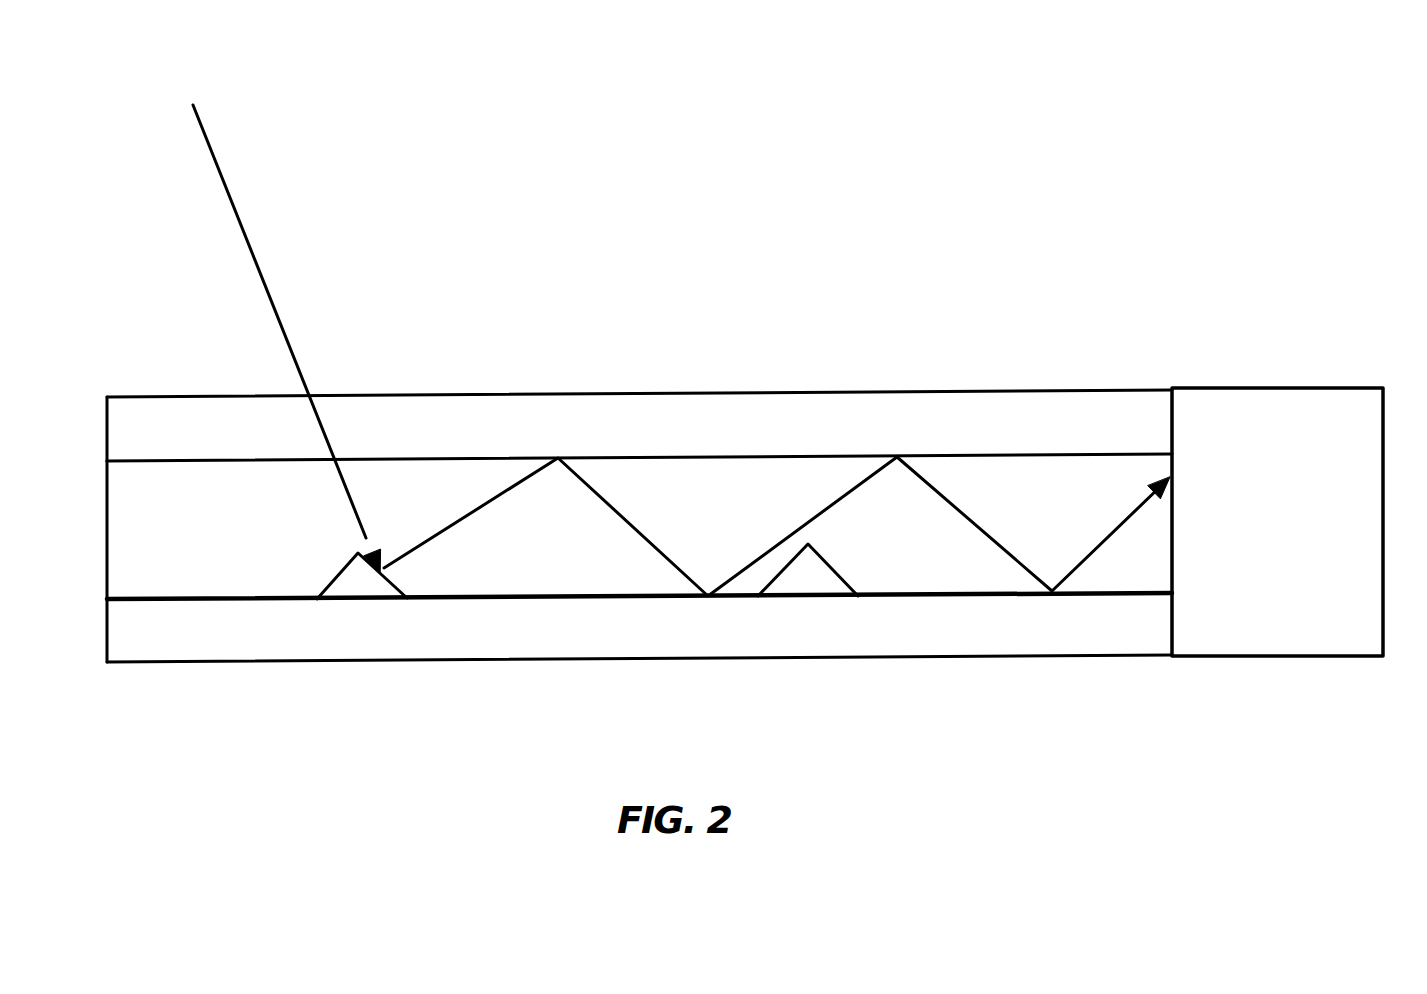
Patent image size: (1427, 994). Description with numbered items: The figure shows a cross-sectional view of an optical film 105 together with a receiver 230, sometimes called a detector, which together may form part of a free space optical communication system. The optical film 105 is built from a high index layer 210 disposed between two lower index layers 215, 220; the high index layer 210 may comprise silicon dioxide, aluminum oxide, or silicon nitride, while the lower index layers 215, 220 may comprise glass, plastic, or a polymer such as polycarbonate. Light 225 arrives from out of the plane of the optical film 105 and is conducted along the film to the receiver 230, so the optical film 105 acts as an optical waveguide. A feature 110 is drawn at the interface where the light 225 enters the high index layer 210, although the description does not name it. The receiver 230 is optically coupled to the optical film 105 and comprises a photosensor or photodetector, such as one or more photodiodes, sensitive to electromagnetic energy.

The optical film 105 is at (632, 471).
The scattering feature 110 is at (357, 582).
The high index layer 210 is at (233, 508).
The lower index layer 215 is at (767, 647).
The lower index layer 220 is at (845, 425).
The light 225 is at (238, 205).
The receiver 230 is at (1285, 385).